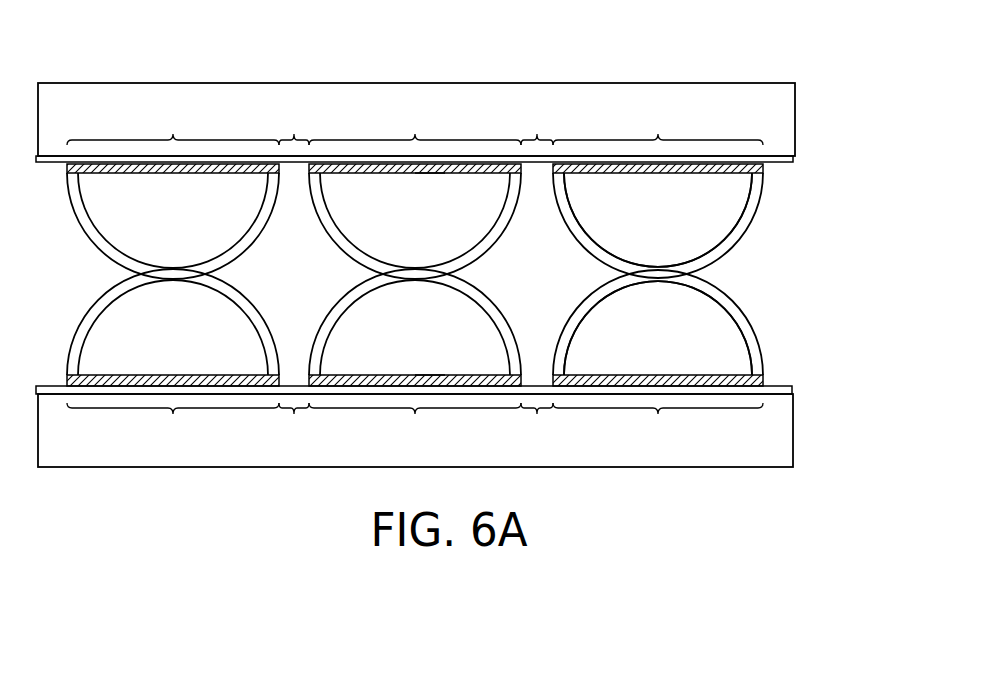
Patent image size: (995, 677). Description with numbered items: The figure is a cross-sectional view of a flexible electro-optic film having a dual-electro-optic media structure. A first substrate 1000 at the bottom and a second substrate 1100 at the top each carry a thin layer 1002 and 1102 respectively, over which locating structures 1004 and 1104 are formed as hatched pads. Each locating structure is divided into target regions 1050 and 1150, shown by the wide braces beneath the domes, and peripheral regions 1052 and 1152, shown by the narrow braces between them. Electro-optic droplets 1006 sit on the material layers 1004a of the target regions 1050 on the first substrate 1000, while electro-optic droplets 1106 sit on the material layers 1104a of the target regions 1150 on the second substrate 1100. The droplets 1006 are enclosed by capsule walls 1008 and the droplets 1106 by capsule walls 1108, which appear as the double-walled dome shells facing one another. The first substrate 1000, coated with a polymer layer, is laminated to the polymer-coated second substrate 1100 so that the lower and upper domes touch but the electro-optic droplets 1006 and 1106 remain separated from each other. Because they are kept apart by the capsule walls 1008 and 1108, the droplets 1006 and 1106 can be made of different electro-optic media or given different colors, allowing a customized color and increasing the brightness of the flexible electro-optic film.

The first substrate 1000 is at (782, 438).
The second electrode layer 1002 is at (782, 393).
The locating structure 1004 is at (763, 377).
The material layer 1004a is at (432, 375).
The electro-optic droplet 1006 is at (703, 347).
The capsule wall 1008 is at (716, 297).
The target region 1050 is at (415, 426).
The peripheral region 1052 is at (415, 426).
The second substrate 1100 is at (782, 110).
The first electrode layer 1102 is at (785, 158).
The locating structure 1104 is at (763, 170).
The material layer 1104a is at (430, 176).
The electro-optic droplet 1106 is at (640, 193).
The capsule wall 1108 is at (556, 180).
The target region 1150 is at (415, 124).
The peripheral region 1152 is at (416, 124).